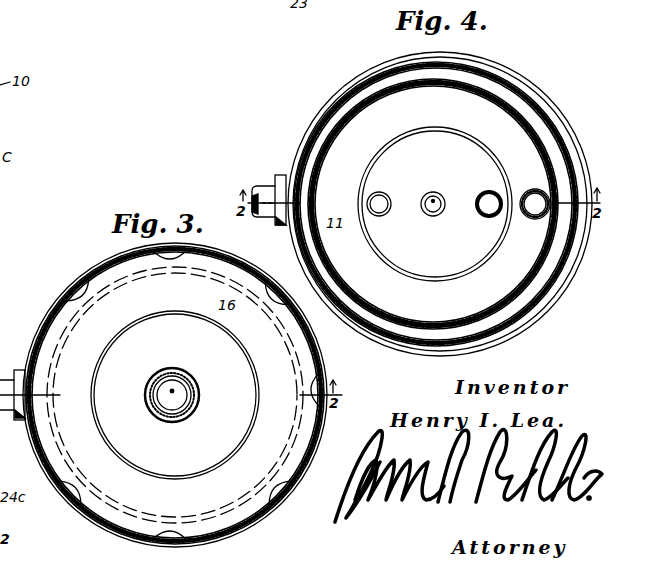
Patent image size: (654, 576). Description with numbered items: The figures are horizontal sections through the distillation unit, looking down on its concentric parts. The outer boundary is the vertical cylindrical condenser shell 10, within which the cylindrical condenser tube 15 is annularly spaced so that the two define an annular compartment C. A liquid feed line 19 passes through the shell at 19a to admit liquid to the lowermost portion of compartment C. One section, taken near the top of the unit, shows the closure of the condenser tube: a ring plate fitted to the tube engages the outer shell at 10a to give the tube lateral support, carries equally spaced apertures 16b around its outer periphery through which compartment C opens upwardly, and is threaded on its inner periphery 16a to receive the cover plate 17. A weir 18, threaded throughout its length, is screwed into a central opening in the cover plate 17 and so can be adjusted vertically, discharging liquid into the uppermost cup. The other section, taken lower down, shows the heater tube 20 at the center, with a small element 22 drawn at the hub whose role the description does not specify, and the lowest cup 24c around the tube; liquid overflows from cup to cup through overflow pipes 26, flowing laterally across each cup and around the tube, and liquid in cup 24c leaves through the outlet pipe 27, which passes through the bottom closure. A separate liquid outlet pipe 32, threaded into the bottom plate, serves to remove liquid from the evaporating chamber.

In FIG. 4, the condenser shell 10 is at (333, 106).
In FIG. 3, the condenser shell 10 is at (90, 520).
In FIG. 3, the engagement with outer shell 10a is at (48, 330).
In FIG. 4, the condenser tube 15 is at (503, 100).
In FIG. 3, the inner periphery 16a is at (146, 316).
In FIG. 3, the apertures 16b is at (78, 276).
In FIG. 3, the cover plate 17 is at (175, 395).
In FIG. 3, the weir 18 is at (196, 390).
In FIG. 4, the liquid feed line 19 is at (280, 182).
In FIG. 3, the liquid feed line 19 is at (18, 370).
In FIG. 4, the passage of feed line through shell 19a is at (280, 227).
In FIG. 3, the passage of feed line through shell 19a is at (20, 422).
In FIG. 4, the heater tube 20 is at (442, 197).
In FIG. 3, the heater tube 20 is at (158, 406).
In FIG. 4, the pin 22 is at (434, 202).
In FIG. 3, the pin 22 is at (173, 395).
In FIG. 4, the cup 24c is at (505, 122).
In FIG. 4, the overflow pipes 26 is at (500, 194).
In FIG. 4, the outlet pipe 27 is at (390, 192).
In FIG. 4, the liquid outlet pipe 32 is at (537, 219).
In FIG. 4, the annular compartment C is at (500, 312).